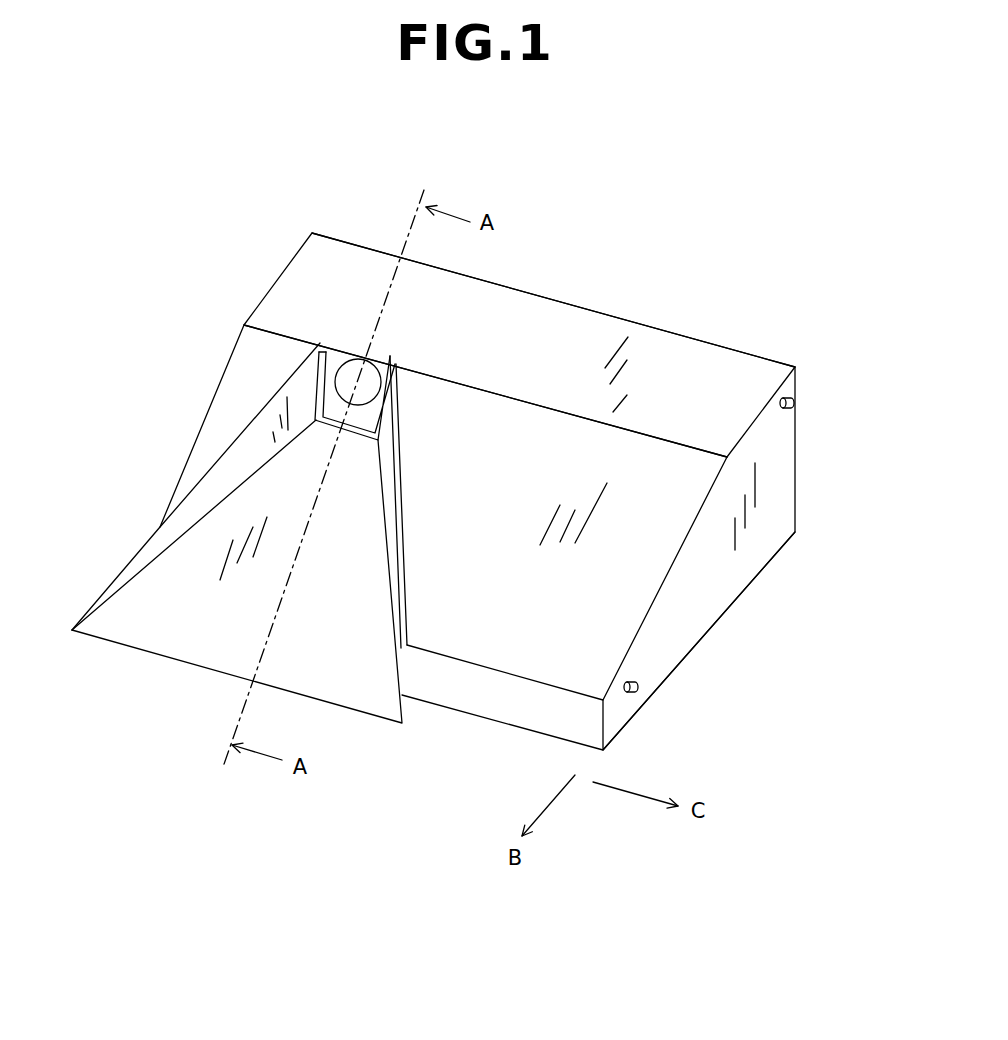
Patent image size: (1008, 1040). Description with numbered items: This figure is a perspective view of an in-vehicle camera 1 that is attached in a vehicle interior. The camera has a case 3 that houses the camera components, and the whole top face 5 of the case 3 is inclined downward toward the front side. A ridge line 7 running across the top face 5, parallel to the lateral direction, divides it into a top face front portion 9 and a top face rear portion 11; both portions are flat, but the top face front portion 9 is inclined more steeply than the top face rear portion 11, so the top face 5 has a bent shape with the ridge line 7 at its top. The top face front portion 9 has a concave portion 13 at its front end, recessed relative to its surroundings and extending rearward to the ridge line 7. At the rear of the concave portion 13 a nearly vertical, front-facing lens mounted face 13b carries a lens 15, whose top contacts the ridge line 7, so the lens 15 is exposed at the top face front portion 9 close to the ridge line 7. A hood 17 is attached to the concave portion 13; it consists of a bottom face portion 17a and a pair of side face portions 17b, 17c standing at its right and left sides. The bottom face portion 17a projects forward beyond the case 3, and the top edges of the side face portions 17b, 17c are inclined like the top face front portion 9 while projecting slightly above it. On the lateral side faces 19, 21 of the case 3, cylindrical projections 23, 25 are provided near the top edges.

The in-vehicle camera 1 is at (724, 168).
The case 3 is at (770, 565).
The top face 5 is at (602, 337).
The ridge line 7 is at (520, 402).
The top face front portion 9 is at (622, 573).
The top face rear portion 11 is at (698, 365).
The concave portion 13 is at (330, 345).
The lens mounted face 13b is at (341, 360).
The lens 15 is at (378, 362).
The hood 17 is at (334, 680).
The bottom face portion 17a is at (168, 637).
The side face portion 17b is at (225, 483).
The side face portion 17c is at (388, 480).
The side face 19 is at (778, 480).
The side face 21 is at (232, 355).
The cylindrical projection 23 is at (640, 690).
The cylindrical projection 25 is at (795, 403).